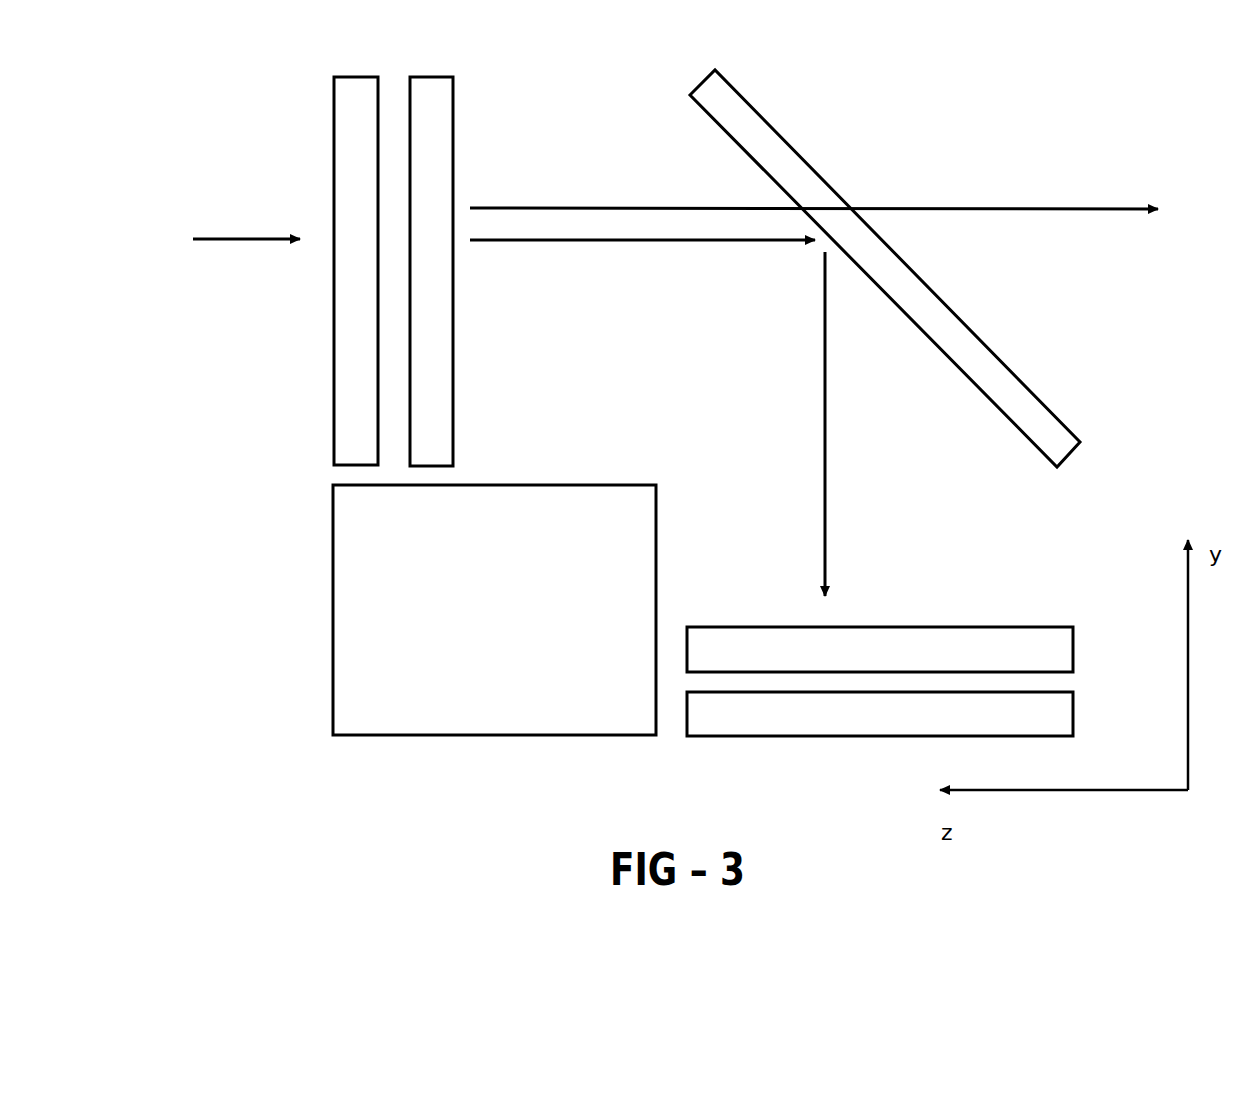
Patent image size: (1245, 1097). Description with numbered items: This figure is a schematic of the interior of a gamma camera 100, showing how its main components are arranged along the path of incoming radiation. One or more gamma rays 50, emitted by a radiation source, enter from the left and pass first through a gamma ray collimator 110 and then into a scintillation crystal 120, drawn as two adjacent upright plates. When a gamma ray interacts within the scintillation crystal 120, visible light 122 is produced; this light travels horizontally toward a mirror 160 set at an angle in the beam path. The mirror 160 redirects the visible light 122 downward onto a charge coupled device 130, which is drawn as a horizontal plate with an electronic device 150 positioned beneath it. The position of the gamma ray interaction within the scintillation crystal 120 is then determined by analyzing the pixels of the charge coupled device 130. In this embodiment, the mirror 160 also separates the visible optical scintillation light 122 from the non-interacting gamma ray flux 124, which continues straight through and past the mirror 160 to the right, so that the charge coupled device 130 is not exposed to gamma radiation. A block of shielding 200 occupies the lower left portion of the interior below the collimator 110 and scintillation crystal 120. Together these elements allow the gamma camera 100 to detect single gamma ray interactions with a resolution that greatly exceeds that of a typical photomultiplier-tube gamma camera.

The gamma rays 50 is at (220, 239).
The gamma camera 100 is at (1092, 106).
The gamma ray collimator 110 is at (352, 113).
The scintillation crystal 120 is at (432, 110).
The visible light 122 is at (634, 242).
The non-interacting gamma ray flux 124 is at (962, 212).
The charge coupled device 130 is at (1023, 637).
The electronic device 150 is at (1063, 715).
The mirror 160 is at (735, 107).
The shielding 200 is at (460, 716).